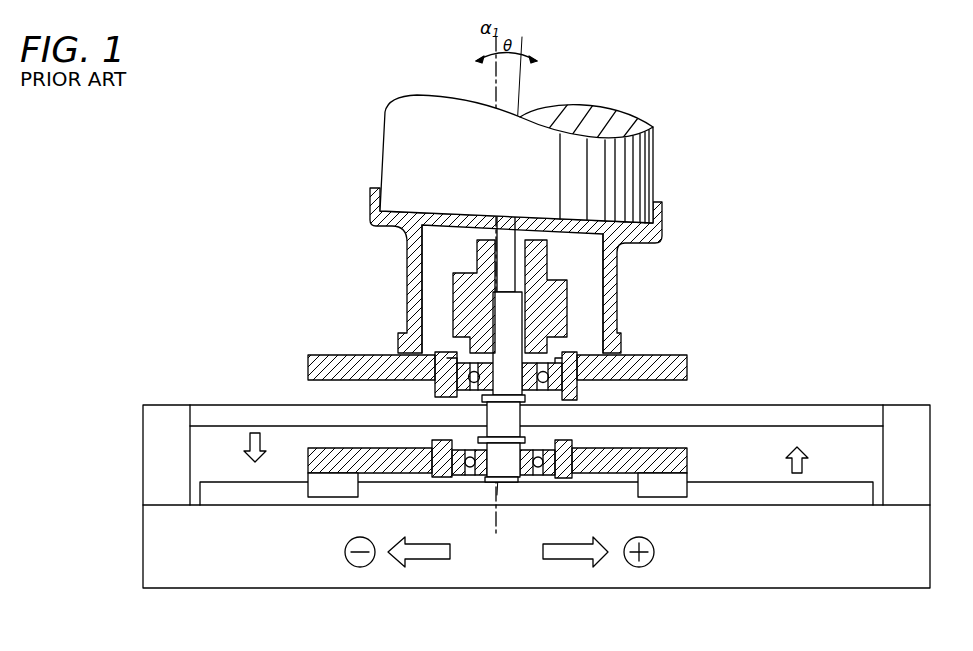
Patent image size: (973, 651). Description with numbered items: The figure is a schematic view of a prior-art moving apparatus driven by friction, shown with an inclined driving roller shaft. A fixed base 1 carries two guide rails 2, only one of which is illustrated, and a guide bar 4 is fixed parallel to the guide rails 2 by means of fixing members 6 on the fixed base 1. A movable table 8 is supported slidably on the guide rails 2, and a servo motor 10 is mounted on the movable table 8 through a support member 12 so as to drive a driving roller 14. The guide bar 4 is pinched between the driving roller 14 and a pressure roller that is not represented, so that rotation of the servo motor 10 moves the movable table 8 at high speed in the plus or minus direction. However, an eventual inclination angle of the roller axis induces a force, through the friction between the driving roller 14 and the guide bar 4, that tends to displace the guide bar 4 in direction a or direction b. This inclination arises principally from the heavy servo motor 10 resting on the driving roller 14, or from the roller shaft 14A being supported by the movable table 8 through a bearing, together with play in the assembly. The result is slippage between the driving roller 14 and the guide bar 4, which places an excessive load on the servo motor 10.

The fixed base 1 is at (920, 545).
The guide rails 2 is at (288, 485).
The guide bar 4 is at (800, 412).
The fixing members 6 is at (167, 418).
The movable table 8 is at (647, 357).
The servo motor 10 is at (645, 170).
The support member 12 is at (613, 280).
The driving roller 14 is at (527, 415).
The roller shaft 14A is at (497, 318).